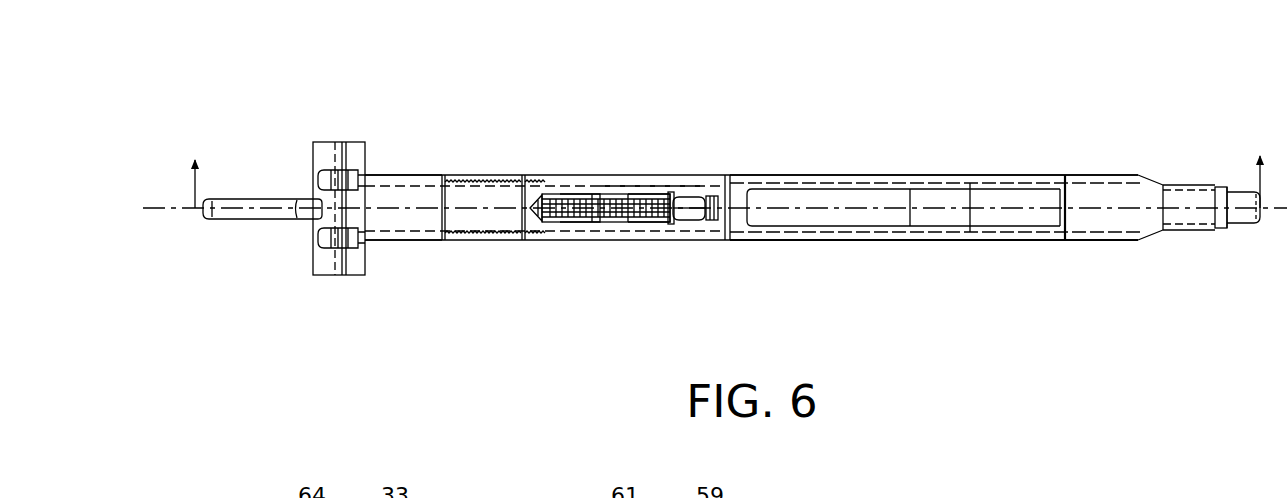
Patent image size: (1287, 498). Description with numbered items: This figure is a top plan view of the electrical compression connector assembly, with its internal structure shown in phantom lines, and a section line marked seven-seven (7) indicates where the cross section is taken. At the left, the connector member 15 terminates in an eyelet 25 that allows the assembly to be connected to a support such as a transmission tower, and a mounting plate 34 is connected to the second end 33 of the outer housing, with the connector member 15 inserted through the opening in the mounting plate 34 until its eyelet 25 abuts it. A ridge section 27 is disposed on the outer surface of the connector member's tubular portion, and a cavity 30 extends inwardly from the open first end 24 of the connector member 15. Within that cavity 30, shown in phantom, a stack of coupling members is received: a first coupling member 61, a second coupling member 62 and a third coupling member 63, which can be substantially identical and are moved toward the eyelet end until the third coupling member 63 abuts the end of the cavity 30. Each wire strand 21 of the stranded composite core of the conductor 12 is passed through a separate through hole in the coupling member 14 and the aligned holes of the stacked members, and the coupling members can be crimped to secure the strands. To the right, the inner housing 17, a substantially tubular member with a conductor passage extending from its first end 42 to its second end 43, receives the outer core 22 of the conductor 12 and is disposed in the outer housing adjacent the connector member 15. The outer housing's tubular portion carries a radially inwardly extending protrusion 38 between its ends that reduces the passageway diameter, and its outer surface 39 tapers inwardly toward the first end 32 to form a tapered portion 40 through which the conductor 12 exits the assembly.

The section line 7- 7 is at (728, 162).
The conductor 12 is at (1240, 230).
The coupling member 14 is at (643, 176).
The connector member 15 is at (405, 243).
The inner housing 17 is at (742, 245).
The wire strand 21 is at (676, 190).
The outer core 22 is at (1245, 188).
The first end 24 is at (680, 222).
The eyelet 25 is at (242, 220).
The ridge section 27 is at (482, 175).
The cavity 30 is at (540, 186).
The first end 32 is at (1167, 182).
The second end 33 is at (397, 175).
The mounting plate 34 is at (325, 276).
The protrusion 38 is at (683, 190).
The outer surface 39 is at (968, 240).
The tapered portion 40 is at (1152, 240).
The first end 42 is at (1222, 187).
The second end 43 is at (700, 190).
The first coupling member 61 is at (640, 222).
The second coupling member 62 is at (598, 222).
The third coupling member 63 is at (560, 193).